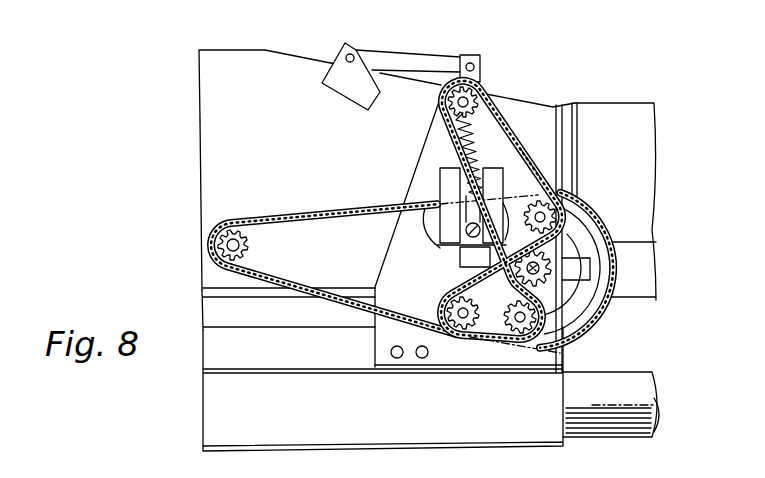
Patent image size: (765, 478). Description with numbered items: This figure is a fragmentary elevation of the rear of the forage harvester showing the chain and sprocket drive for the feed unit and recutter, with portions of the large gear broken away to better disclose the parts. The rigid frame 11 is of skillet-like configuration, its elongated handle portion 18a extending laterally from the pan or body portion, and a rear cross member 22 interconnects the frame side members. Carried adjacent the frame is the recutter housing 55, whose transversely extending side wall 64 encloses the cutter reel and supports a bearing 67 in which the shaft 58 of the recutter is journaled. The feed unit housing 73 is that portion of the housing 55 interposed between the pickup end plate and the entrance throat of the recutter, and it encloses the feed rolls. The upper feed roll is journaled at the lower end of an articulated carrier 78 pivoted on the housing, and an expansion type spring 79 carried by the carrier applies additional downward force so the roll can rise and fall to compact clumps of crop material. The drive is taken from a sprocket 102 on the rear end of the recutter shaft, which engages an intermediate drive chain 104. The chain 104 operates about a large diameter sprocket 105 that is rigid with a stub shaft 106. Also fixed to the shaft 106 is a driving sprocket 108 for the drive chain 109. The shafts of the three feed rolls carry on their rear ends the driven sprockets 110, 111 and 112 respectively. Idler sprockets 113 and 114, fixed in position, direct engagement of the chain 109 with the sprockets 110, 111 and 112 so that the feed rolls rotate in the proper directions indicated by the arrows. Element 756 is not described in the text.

The recutter housing 55 is at (198, 92).
The side wall 64 is at (210, 157).
The bearing 67 is at (215, 277).
The cross member 22 is at (265, 434).
The feed unit housing 73 is at (520, 96).
The articulated carrier 78 is at (420, 62).
The idler sprocket 114 is at (470, 90).
The driven sprocket 111 is at (437, 192).
The plunger 756 is at (462, 250).
The idler sprocket 113 is at (552, 205).
The stub shaft 106 is at (512, 286).
The driven sprocket 110 is at (522, 324).
The driven sprocket 112 is at (461, 320).
The driving sprocket 108 is at (597, 307).
The sprocket 102 is at (252, 248).
The shaft 58 is at (226, 243).
The handle portion 18a is at (632, 380).
The frame 11 is at (662, 396).
The intermediate drive chain 104 is at (305, 212).
The expansion type spring 79 is at (478, 147).
The drive chain 109 is at (543, 168).
The large diameter sprocket 105 is at (598, 226).